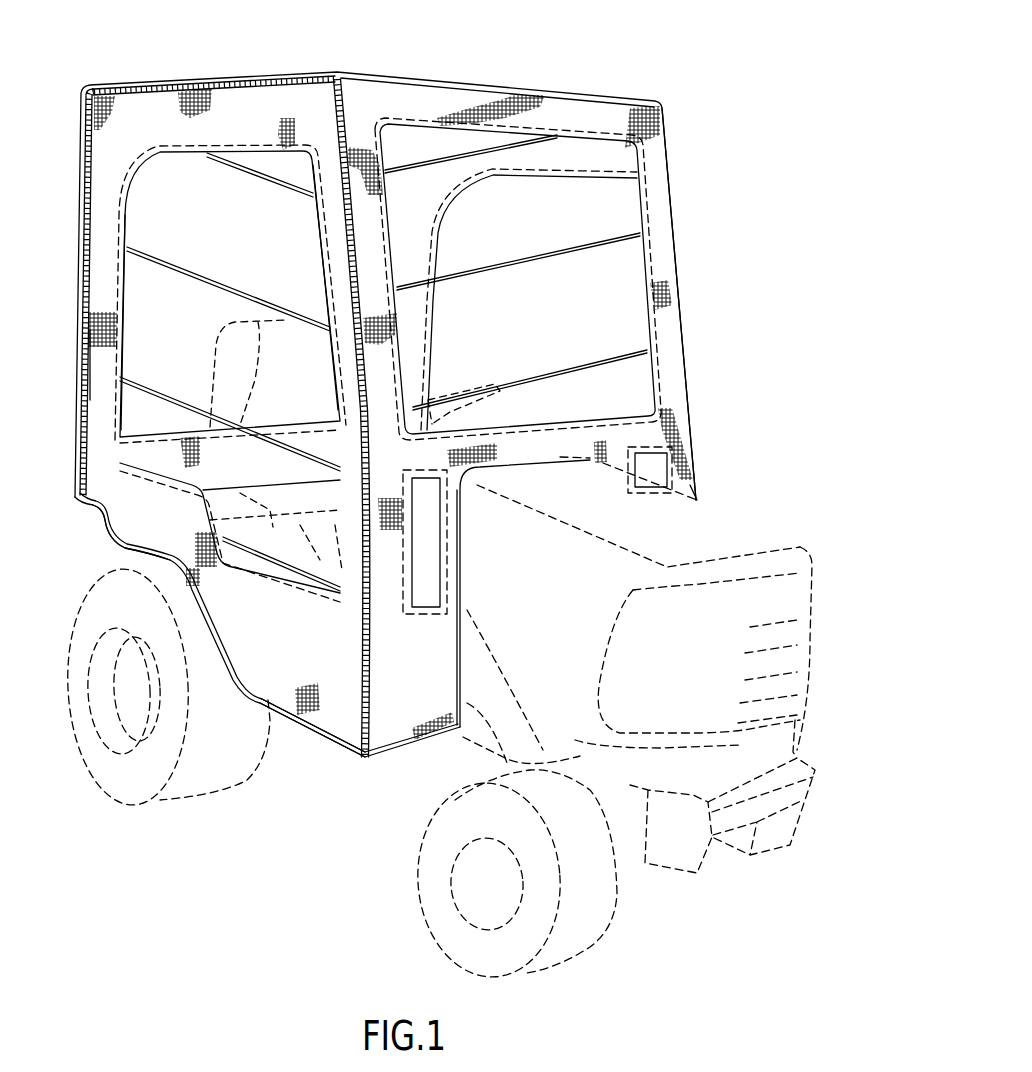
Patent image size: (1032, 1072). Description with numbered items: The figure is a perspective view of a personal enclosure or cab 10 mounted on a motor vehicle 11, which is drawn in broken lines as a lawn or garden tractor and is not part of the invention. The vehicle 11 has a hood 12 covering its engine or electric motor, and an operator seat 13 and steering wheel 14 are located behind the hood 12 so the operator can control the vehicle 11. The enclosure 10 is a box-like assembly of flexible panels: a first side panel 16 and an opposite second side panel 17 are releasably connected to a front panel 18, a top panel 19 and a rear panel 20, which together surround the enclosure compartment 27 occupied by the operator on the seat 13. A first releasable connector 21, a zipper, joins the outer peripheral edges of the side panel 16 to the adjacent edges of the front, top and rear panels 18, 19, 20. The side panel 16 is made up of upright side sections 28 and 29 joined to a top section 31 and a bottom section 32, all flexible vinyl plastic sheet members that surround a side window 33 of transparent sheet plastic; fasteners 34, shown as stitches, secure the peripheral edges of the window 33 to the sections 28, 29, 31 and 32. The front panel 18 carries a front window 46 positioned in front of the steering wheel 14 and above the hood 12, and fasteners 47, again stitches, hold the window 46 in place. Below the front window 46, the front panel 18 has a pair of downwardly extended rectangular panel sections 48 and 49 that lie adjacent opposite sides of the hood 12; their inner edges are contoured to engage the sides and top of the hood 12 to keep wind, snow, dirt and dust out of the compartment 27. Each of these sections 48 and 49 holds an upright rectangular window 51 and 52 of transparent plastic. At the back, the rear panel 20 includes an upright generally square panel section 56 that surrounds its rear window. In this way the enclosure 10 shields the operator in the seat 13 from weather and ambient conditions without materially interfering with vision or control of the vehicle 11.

The personal enclosure 10 is at (688, 106).
The motor vehicle 11 is at (787, 535).
The hood 12 is at (693, 540).
The operator seat 13 is at (265, 316).
The steering wheel 14 is at (480, 390).
The first side panel 16 is at (103, 390).
The second side panel 17 is at (540, 160).
The front panel 18 is at (660, 267).
The top panel 19 is at (430, 72).
The rear panel 20 is at (78, 236).
The first releasable connector 21 is at (360, 710).
The enclosure compartment 27 is at (197, 253).
The upright side section 28 is at (336, 230).
The upright side section 29 is at (100, 352).
The top section 31 is at (232, 90).
The bottom section 32 is at (130, 530).
The side window 33 is at (148, 195).
The fasteners 34 is at (118, 270).
The front window 46 is at (620, 337).
The fasteners 47 is at (657, 343).
The rectangular panel section 48 is at (400, 730).
The rectangular panel section 49 is at (683, 483).
The upright rectangular window 51 is at (423, 595).
The upright rectangular window 52 is at (660, 463).
The upright panel section 56 is at (145, 455).